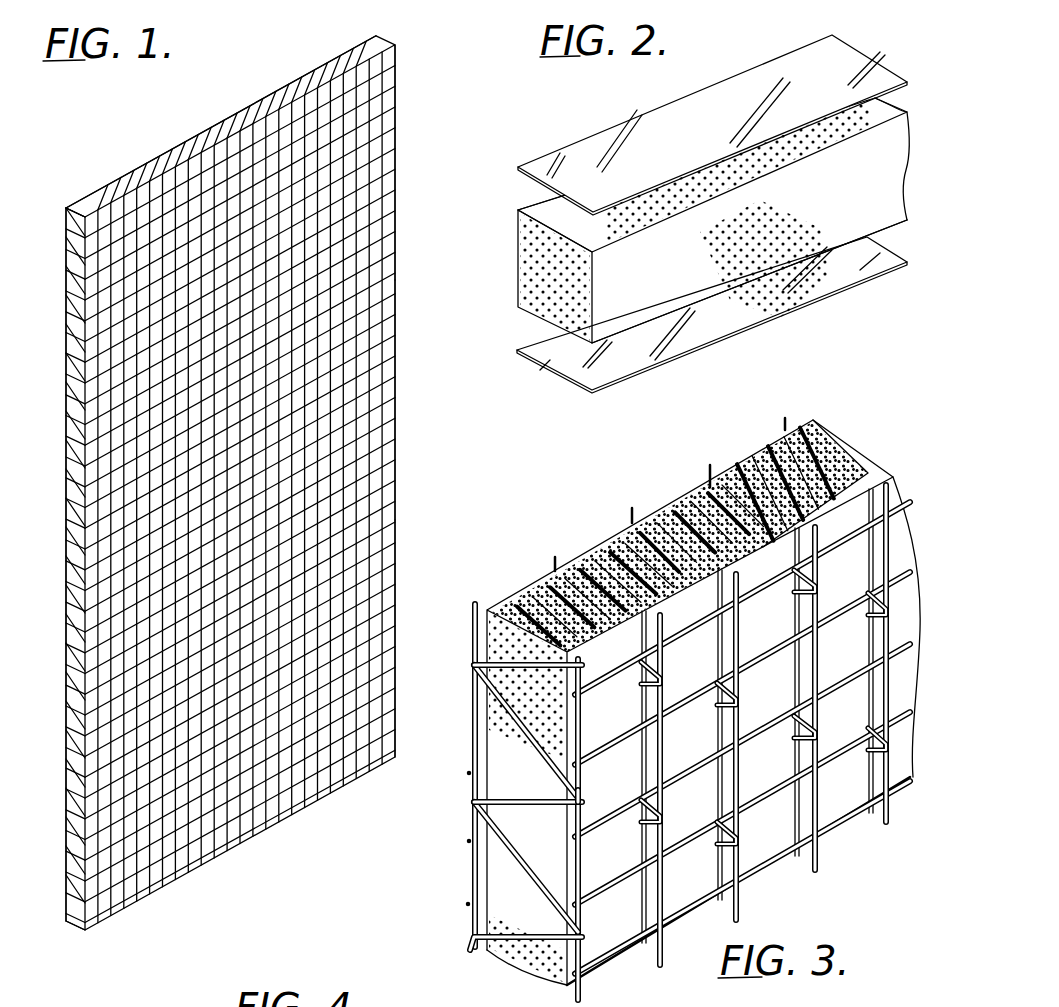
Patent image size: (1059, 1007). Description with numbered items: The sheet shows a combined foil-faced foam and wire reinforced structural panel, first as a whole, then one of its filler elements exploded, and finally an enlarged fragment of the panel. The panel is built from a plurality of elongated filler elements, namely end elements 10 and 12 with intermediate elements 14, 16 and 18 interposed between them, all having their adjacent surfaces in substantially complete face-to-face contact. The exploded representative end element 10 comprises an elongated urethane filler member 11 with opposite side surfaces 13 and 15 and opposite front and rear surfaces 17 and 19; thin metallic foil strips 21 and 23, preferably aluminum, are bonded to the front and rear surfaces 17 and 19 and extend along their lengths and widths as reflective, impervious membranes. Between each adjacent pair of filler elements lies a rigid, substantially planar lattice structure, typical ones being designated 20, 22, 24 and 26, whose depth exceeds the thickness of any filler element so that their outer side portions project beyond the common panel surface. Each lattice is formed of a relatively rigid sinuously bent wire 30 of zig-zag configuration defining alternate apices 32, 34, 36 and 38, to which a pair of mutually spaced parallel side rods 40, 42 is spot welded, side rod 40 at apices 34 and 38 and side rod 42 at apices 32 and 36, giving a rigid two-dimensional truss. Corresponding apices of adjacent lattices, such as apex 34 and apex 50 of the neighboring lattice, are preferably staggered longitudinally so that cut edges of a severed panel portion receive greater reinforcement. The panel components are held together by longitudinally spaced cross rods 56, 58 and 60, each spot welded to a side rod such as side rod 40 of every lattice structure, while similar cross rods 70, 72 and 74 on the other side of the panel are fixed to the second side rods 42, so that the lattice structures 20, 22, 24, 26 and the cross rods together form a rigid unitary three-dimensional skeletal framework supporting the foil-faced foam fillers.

In FIG. 1, the end filler element 10 is at (82, 210).
In FIG. 2, the end filler element 10 is at (503, 255).
In FIG. 3, the end filler element 10 is at (532, 595).
In FIG. 2, the urethane filler member 11 is at (535, 278).
In FIG. 1, the end filler element 12 is at (383, 37).
In FIG. 2, the side surface 13 is at (737, 277).
In FIG. 1, the intermediate filler element 14 is at (108, 217).
In FIG. 3, the intermediate filler element 14 is at (623, 540).
In FIG. 2, the side surface 15 is at (537, 200).
In FIG. 1, the intermediate filler element 16 is at (107, 208).
In FIG. 3, the intermediate filler element 16 is at (693, 500).
In FIG. 2, the front surface 17 is at (540, 211).
In FIG. 1, the intermediate filler element 18 is at (123, 190).
In FIG. 3, the intermediate filler element 18 is at (782, 455).
In FIG. 2, the rear surface 19 is at (625, 338).
In FIG. 1, the lattice structure 20 is at (97, 220).
In FIG. 3, the lattice structure 20 is at (667, 755).
In FIG. 2, the metallic foil strip 21 is at (602, 140).
In FIG. 3, the metallic foil strip 21 is at (890, 464).
In FIG. 1, the lattice structure 22 is at (113, 210).
In FIG. 3, the lattice structure 22 is at (743, 713).
In FIG. 2, the metallic foil strip 23 is at (560, 367).
In FIG. 3, the metallic foil strip 23 is at (709, 465).
In FIG. 1, the lattice structure 24 is at (122, 193).
In FIG. 3, the lattice structure 24 is at (822, 668).
In FIG. 1, the lattice structure 26 is at (117, 192).
In FIG. 3, the lattice structure 26 is at (897, 629).
In FIG. 3, the sinuously bent wire 30 is at (507, 713).
In FIG. 3, the apex 32 is at (470, 666).
In FIG. 3, the apex 34 is at (583, 796).
In FIG. 3, the apex 36 is at (470, 802).
In FIG. 3, the apex 38 is at (583, 928).
In FIG. 3, the side rod 40 is at (583, 722).
In FIG. 3, the side rod 42 is at (470, 749).
In FIG. 3, the apex 50 is at (663, 677).
In FIG. 1, the cross rod 56 is at (395, 62).
In FIG. 1, the cross rod 58 is at (395, 80).
In FIG. 3, the cross rod 58 is at (832, 545).
In FIG. 1, the cross rod 60 is at (395, 98).
In FIG. 3, the cross rod 60 is at (830, 620).
In FIG. 3, the cross rod 70 is at (470, 772).
In FIG. 3, the cross rod 72 is at (470, 841).
In FIG. 3, the cross rod 74 is at (468, 904).